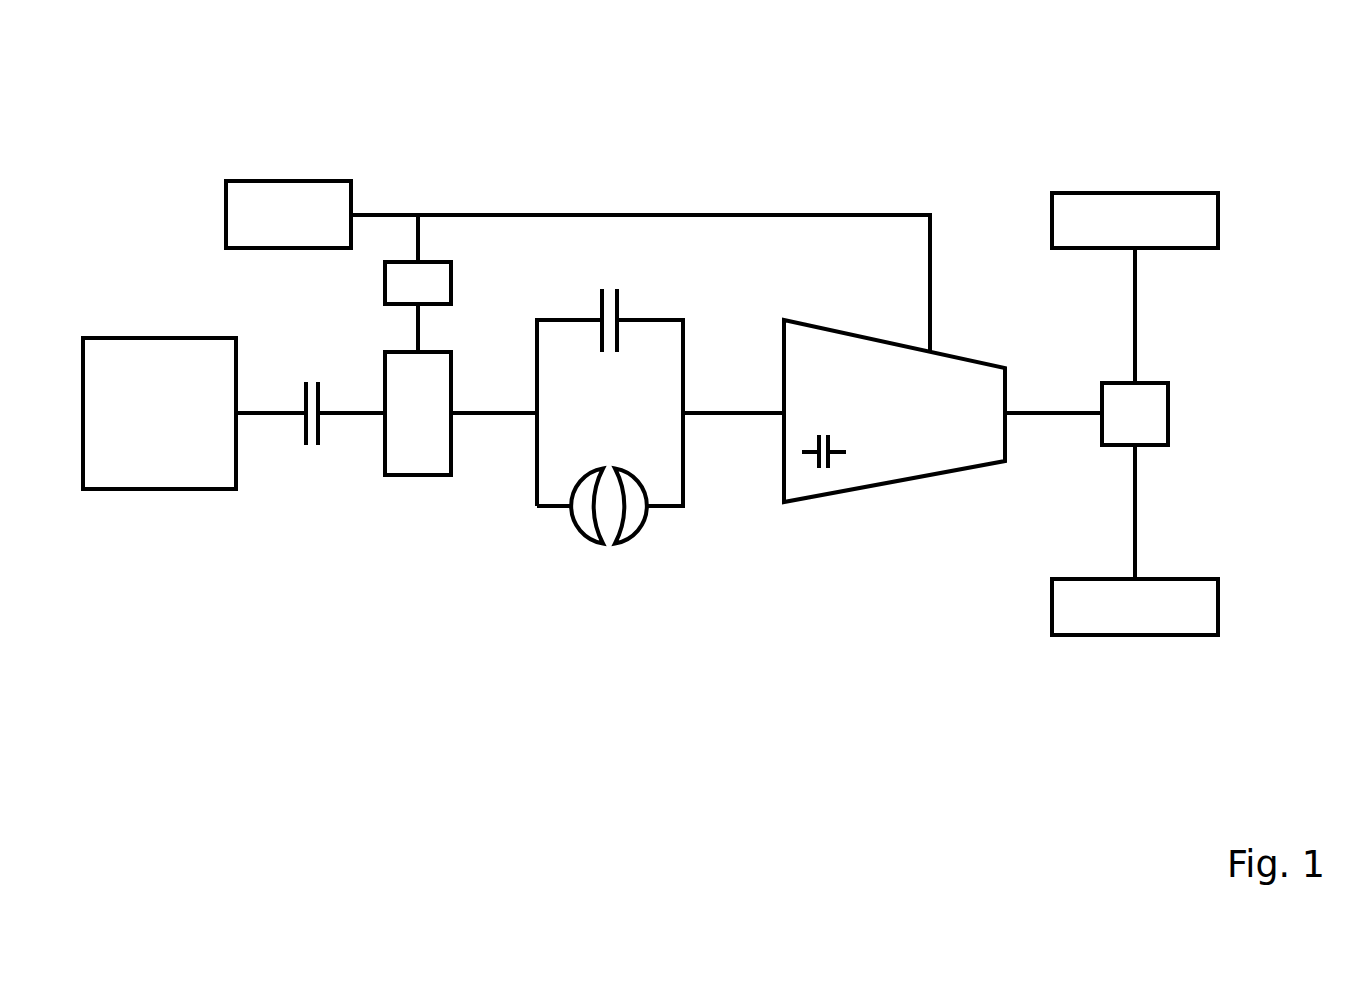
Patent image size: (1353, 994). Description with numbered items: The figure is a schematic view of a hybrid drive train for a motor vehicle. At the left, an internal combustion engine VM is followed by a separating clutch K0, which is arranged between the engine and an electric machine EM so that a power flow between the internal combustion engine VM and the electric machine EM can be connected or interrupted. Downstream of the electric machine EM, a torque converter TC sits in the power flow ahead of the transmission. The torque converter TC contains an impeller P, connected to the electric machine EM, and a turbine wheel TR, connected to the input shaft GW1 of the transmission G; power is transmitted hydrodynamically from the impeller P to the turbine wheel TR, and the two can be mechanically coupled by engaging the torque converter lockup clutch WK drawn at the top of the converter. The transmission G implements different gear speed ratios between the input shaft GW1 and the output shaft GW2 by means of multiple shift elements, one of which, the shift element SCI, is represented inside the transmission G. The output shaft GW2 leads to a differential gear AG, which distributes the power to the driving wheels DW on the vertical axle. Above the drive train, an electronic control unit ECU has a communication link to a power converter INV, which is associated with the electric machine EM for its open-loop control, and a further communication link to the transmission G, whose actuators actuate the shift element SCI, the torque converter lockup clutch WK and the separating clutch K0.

The internal combustion engine VM is at (176, 462).
The separating clutch K0 is at (309, 452).
The electronic control unit ECU is at (322, 196).
The power converter INV is at (427, 277).
The electric machine EM is at (437, 372).
The torque converter lockup clutch WK is at (613, 276).
The torque converter TC is at (598, 546).
The impeller P is at (582, 512).
The turbine wheel TR is at (637, 513).
The transmission G is at (847, 368).
The shift element SCI is at (828, 481).
The input shaft GW1 is at (720, 413).
The output shaft GW2 is at (1053, 413).
The driving wheels DW is at (1103, 213).
The differential gear AG is at (1155, 410).